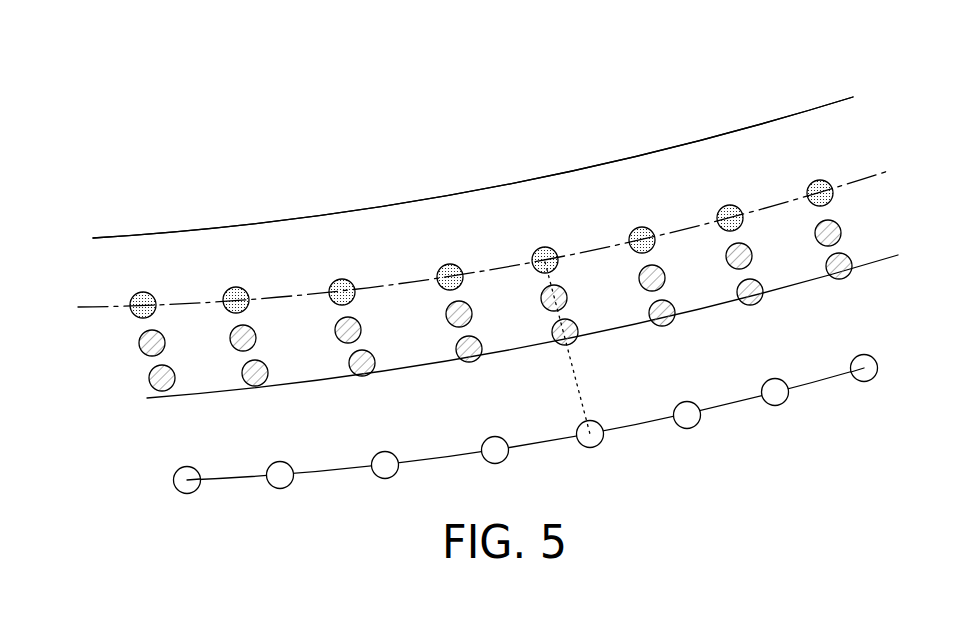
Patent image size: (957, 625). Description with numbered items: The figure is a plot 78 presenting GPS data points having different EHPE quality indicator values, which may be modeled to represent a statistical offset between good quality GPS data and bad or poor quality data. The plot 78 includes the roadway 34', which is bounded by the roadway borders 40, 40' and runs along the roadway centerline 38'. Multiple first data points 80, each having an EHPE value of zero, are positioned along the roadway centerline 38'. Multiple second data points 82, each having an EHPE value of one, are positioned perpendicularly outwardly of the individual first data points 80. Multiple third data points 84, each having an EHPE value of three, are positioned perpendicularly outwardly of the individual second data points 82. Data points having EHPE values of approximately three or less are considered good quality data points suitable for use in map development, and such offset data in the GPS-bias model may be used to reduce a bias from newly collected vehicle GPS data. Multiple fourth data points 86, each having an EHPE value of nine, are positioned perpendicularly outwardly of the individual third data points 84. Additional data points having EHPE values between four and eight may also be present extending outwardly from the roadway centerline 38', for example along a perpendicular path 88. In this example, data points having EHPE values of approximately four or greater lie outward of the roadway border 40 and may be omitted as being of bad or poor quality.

The plot 78 is at (572, 81).
The roadway 34' is at (473, 166).
The roadway border 40' is at (473, 167).
The roadway centerline 38' is at (483, 239).
The roadway border 40 is at (538, 289).
The first data points 80 is at (134, 297).
The second data points 82 is at (140, 339).
The third data points 84 is at (150, 374).
The fourth data points 86 is at (178, 471).
The perpendicular path 88 is at (586, 378).